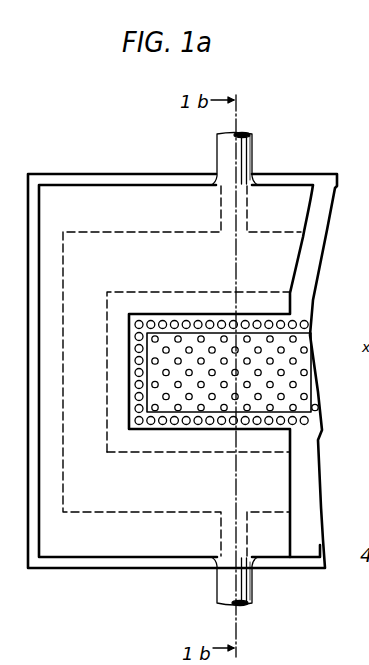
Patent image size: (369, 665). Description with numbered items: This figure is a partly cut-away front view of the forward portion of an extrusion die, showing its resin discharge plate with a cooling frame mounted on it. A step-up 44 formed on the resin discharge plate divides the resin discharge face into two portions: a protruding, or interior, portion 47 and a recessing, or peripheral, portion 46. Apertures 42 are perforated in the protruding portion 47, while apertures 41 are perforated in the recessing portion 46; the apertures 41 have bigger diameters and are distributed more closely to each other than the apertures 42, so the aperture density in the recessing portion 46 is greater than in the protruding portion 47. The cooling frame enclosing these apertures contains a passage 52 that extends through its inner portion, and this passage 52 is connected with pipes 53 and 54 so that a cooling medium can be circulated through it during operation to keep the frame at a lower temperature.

The apertures 41 is at (189, 321).
The apertures 42 is at (167, 350).
The step-up 44 is at (258, 334).
The recessing portion 46 is at (304, 415).
The protruding portion 47 is at (304, 390).
The passage 52 is at (113, 497).
The pipe 53 is at (240, 159).
The pipe 54 is at (247, 583).